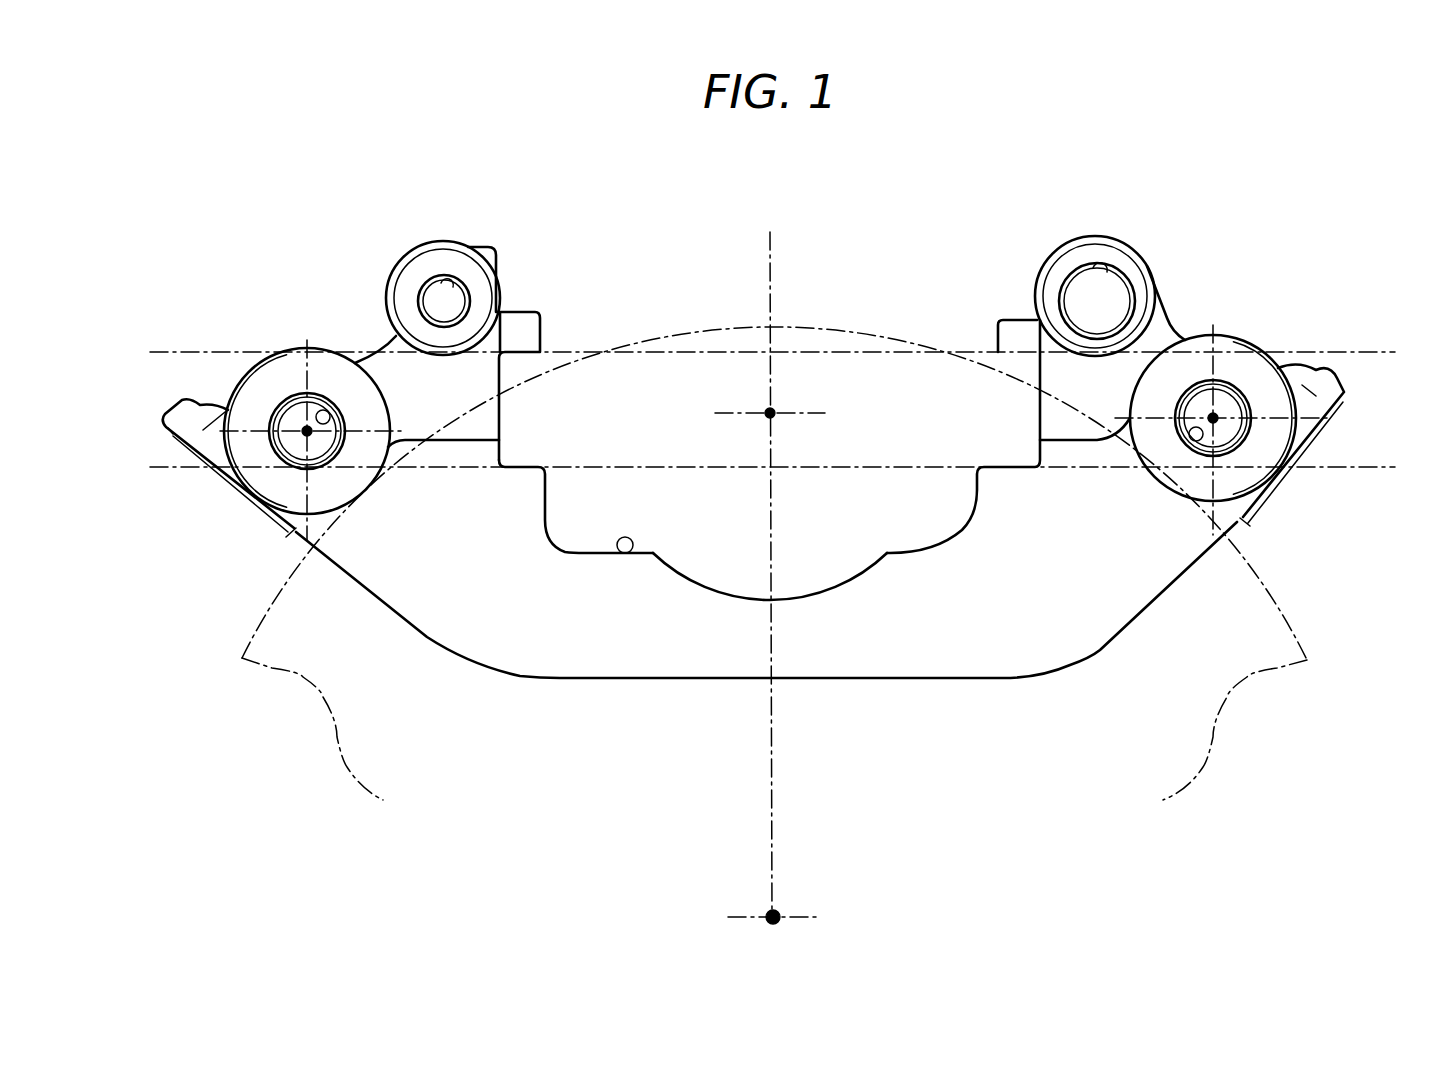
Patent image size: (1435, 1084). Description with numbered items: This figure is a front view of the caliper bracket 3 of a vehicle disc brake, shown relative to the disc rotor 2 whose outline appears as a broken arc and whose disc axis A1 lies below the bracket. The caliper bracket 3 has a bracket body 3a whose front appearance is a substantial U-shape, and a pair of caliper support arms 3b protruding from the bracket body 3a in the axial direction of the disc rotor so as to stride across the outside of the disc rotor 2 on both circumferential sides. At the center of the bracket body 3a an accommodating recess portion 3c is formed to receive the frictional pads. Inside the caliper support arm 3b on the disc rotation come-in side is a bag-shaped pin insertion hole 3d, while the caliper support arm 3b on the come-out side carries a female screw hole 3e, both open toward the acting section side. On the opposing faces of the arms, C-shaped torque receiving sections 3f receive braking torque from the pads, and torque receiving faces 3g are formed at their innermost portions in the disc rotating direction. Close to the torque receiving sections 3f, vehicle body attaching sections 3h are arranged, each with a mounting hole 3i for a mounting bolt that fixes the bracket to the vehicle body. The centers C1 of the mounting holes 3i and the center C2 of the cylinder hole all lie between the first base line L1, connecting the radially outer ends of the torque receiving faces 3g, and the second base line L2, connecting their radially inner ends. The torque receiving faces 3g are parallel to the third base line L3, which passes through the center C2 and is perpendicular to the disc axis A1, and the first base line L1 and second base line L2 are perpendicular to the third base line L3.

The disc rotor 2 is at (1252, 598).
The caliper bracket 3 is at (981, 210).
The bracket body 3a is at (712, 668).
The caliper support arm 3b is at (390, 340).
The accommodating recess portion 3c is at (628, 552).
The pin insertion hole 3d is at (1100, 280).
The female screw hole 3e is at (450, 286).
The torque receiving section 3f is at (514, 411).
The torque receiving face 3g is at (500, 430).
The vehicle body attaching section 3h is at (290, 530).
The mounting hole 3i is at (338, 428).
The center of mounting hole C1 is at (305, 428).
The center of cylinder hole C2 is at (763, 411).
The first base line L1 is at (1333, 350).
The second base line L2 is at (1362, 470).
The third base line L3 is at (771, 292).
The disc axis A1 is at (778, 912).